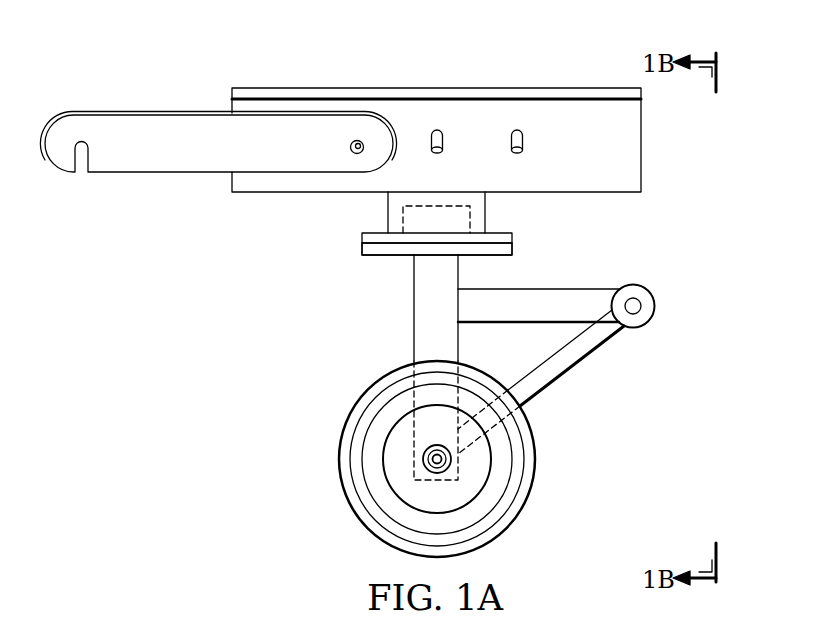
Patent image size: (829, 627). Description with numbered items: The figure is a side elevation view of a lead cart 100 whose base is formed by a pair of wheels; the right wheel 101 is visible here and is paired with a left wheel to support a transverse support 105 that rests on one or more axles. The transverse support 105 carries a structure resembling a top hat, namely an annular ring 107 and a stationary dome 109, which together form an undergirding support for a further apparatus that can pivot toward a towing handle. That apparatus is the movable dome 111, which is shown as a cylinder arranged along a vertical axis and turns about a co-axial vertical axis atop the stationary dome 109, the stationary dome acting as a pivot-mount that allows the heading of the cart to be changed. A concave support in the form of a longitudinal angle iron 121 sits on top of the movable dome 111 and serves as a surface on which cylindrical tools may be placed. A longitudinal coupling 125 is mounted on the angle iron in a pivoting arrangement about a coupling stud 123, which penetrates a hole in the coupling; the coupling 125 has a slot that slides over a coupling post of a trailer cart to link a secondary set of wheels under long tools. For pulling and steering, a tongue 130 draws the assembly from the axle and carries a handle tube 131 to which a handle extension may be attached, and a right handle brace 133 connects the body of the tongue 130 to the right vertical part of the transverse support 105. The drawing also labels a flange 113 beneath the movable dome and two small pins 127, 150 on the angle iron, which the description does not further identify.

The lead cart 100 is at (318, 55).
The right wheel 101 is at (339, 458).
The transverse support 105 is at (415, 310).
The annular ring 107 is at (367, 249).
The stationary dome 109 is at (455, 206).
The movable dome 111 is at (388, 212).
The upper flange plate 113 is at (505, 243).
The longitudinal angle iron 121 is at (642, 140).
The coupling stud 123 is at (350, 149).
The longitudinal coupling 125 is at (156, 113).
The pin 127 is at (434, 128).
The tongue 130 is at (574, 368).
The handle tube 131 is at (655, 304).
The right handle brace 133 is at (597, 288).
The pin 150 is at (524, 152).